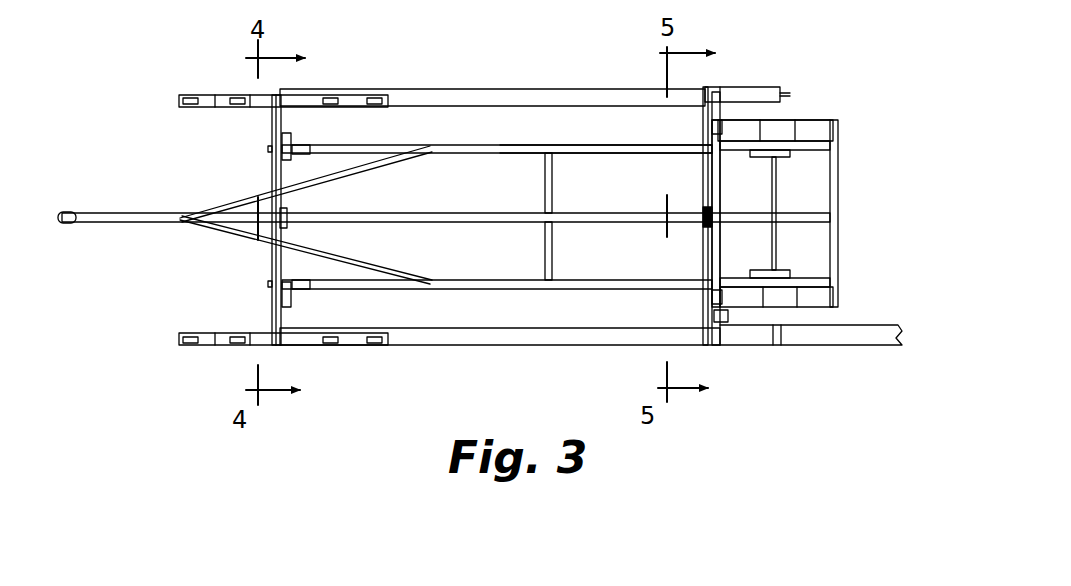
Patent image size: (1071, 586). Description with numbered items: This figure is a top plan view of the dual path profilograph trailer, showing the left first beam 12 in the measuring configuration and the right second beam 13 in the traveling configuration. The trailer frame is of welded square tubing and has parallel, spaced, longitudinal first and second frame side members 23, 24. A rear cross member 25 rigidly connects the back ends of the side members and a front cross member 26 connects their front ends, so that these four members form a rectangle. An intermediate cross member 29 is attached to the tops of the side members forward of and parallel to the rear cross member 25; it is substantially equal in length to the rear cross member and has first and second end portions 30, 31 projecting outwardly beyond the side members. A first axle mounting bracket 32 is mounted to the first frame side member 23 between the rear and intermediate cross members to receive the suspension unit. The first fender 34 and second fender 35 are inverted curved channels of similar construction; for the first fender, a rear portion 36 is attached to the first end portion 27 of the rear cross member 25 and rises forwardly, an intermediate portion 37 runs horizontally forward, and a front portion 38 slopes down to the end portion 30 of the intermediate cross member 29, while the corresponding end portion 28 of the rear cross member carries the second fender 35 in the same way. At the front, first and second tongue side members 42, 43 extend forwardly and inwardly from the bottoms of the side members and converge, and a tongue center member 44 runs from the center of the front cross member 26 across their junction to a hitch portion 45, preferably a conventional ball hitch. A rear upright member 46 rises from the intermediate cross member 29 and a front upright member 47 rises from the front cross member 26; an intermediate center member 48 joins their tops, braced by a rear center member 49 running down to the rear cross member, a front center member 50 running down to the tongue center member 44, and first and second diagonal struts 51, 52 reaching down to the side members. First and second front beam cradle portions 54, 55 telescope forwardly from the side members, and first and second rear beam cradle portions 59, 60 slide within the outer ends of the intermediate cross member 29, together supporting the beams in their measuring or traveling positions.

The left first beam 12 is at (485, 356).
The right second beam 13 is at (478, 86).
The first frame side member 23 is at (436, 289).
The second frame side member 24 is at (623, 143).
The rear cross member 25 is at (807, 228).
The front cross member 26 is at (288, 133).
The first end portion of rear cross member 27 is at (811, 259).
The upper rear member 28 is at (806, 102).
The intermediate cross member 29 is at (722, 192).
The first end portion of intermediate cross member 30 is at (724, 300).
The second end portion of intermediate cross member 31 is at (722, 135).
The first axle mounting bracket 32 is at (782, 268).
The first fender 34 is at (787, 308).
The second fender 35 is at (788, 120).
The rear portion of first fender 36 is at (818, 292).
The intermediate portion of first fender 37 is at (785, 297).
The front portion of first fender 38 is at (745, 280).
The first tongue side member 42 is at (343, 257).
The second tongue side member 43 is at (362, 173).
The tongue center member 44 is at (152, 216).
The hitch portion 45 is at (62, 214).
The rear upright member 46 is at (703, 215).
The front upright member 47 is at (292, 212).
The intermediate center member 48 is at (613, 210).
The rear center member 49 is at (797, 210).
The front center member 50 is at (306, 215).
The first diagonal strut 51 is at (543, 252).
The second diagonal strut 52 is at (543, 185).
The first front beam cradle portion 54 is at (303, 290).
The second front beam cradle portion 55 is at (323, 147).
The first rear beam cradle portion 59 is at (723, 322).
The second rear beam cradle portion 60 is at (722, 120).